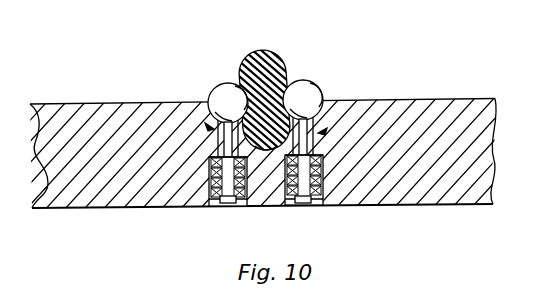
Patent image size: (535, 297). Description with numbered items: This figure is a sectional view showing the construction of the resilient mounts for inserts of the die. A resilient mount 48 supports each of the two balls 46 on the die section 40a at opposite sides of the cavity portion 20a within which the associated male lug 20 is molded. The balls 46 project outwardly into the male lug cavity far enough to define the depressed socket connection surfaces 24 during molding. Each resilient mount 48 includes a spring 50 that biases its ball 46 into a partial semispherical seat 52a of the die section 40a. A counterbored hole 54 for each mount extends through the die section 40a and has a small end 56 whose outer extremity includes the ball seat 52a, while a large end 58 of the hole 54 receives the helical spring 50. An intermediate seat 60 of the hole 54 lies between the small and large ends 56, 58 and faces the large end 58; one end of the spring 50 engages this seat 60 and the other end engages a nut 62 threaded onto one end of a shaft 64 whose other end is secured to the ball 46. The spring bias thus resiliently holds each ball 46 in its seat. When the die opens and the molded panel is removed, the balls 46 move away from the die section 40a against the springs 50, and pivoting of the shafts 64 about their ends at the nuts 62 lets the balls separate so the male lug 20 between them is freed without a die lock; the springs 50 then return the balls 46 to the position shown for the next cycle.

The male lug 20 is at (273, 52).
The cavity portion 20a is at (266, 152).
The depressed socket connection surfaces 24 is at (230, 98).
The die section 40a is at (432, 84).
The ball 46 is at (228, 97).
The spring 50 is at (210, 159).
The partial semispherical seat 52a is at (214, 99).
The counterbored hole 54 is at (212, 129).
The small end 56 is at (203, 120).
The large end 58 is at (212, 172).
The intermediate seat 60 is at (240, 206).
The nut 62 is at (222, 206).
The shaft 64 is at (208, 203).
The resilient mount 48 is at (207, 124).